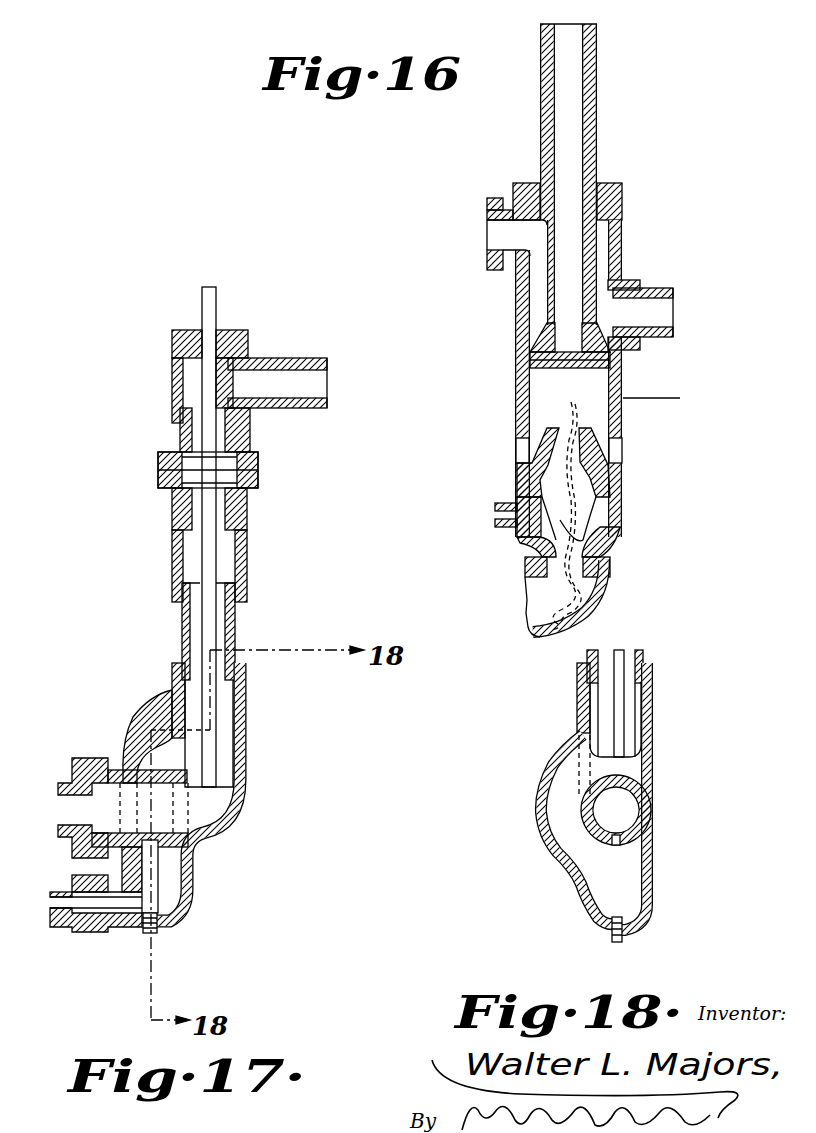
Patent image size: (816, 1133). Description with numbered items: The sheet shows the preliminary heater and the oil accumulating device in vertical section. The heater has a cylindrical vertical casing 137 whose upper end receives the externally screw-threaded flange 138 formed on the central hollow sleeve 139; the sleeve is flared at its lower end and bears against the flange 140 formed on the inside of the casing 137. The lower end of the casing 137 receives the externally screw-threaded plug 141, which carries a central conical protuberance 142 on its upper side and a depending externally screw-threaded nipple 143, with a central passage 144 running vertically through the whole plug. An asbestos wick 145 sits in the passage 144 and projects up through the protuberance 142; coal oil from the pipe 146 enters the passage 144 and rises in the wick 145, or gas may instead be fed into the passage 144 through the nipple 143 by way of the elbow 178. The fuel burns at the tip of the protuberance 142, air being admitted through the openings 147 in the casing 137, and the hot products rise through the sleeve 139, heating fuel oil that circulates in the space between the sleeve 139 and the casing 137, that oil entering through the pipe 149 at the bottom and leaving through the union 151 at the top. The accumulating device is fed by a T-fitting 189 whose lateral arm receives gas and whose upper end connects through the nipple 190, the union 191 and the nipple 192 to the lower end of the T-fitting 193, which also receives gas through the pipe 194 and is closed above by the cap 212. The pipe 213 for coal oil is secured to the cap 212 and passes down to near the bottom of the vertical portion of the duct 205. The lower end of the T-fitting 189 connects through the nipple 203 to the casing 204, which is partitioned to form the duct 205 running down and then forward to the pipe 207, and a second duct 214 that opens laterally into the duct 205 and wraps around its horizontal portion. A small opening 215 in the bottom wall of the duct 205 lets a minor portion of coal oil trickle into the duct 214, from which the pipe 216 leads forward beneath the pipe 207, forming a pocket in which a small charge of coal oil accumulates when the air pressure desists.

In FIG. 16, the cylindrical vertical casing 137 is at (622, 242).
In FIG. 16, the externally screw-threaded flange 138 is at (625, 186).
In FIG. 16, the central hollow sleeve 139 is at (597, 106).
In FIG. 16, the flange 140 is at (623, 362).
In FIG. 16, the externally screw-threaded plug 141 is at (525, 541).
In FIG. 16, the central conical protuberance 142 is at (598, 457).
In FIG. 16, the externally screw-threaded nipple 143 is at (603, 550).
In FIG. 16, the central passage 144 is at (600, 527).
In FIG. 16, the asbestos wick 145 is at (578, 507).
In FIG. 16, the pipe 146 is at (500, 515).
In FIG. 16, the openings 147 is at (622, 462).
In FIG. 16, the pipe 149 is at (665, 314).
In FIG. 16, the union 151 is at (490, 204).
In FIG. 16, the elbow 178 is at (597, 602).
In FIG. 17, the T-fitting 189 is at (248, 558).
In FIG. 17, the nipple 190 is at (245, 510).
In FIG. 17, the union 191 is at (258, 470).
In FIG. 17, the nipple 192 is at (245, 430).
In FIG. 17, the T-fitting 193 is at (178, 383).
In FIG. 17, the pipe 194 is at (306, 358).
In FIG. 17, the nipple 203 is at (235, 637).
In FIG. 17, the casing 204 is at (248, 752).
In FIG. 18, the casing 204 is at (653, 752).
In FIG. 17, the duct 205 is at (217, 798).
In FIG. 18, the duct 205 is at (635, 720).
In FIG. 17, the pipe 207 is at (62, 790).
In FIG. 17, the cap 212 is at (183, 330).
In FIG. 17, the pipe 213 is at (216, 300).
In FIG. 18, the pipe 213 is at (614, 712).
In FIG. 17, the second duct 214 is at (155, 740).
In FIG. 18, the second duct 214 is at (560, 800).
In FIG. 17, the small opening 215 is at (152, 845).
In FIG. 18, the small opening 215 is at (618, 840).
In FIG. 17, the pipe 216 is at (62, 900).